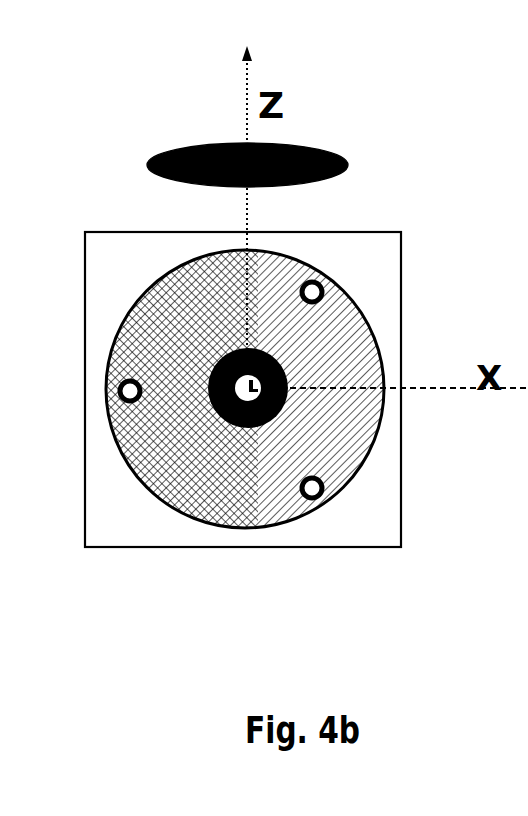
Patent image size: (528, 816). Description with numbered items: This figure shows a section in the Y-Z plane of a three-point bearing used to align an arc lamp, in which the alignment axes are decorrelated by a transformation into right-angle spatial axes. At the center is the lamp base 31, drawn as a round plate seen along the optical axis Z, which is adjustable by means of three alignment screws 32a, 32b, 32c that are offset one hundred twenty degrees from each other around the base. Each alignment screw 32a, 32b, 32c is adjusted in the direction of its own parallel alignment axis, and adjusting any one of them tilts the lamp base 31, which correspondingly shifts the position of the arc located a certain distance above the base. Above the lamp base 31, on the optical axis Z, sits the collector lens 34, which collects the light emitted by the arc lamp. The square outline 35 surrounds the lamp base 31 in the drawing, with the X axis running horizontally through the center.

The lamp base 31 is at (355, 440).
The alignment screw 32a is at (131, 403).
The alignment screw 32b is at (325, 276).
The alignment screw 32c is at (308, 498).
The collector lens 34 is at (187, 145).
The square frame / holder 35 is at (382, 518).